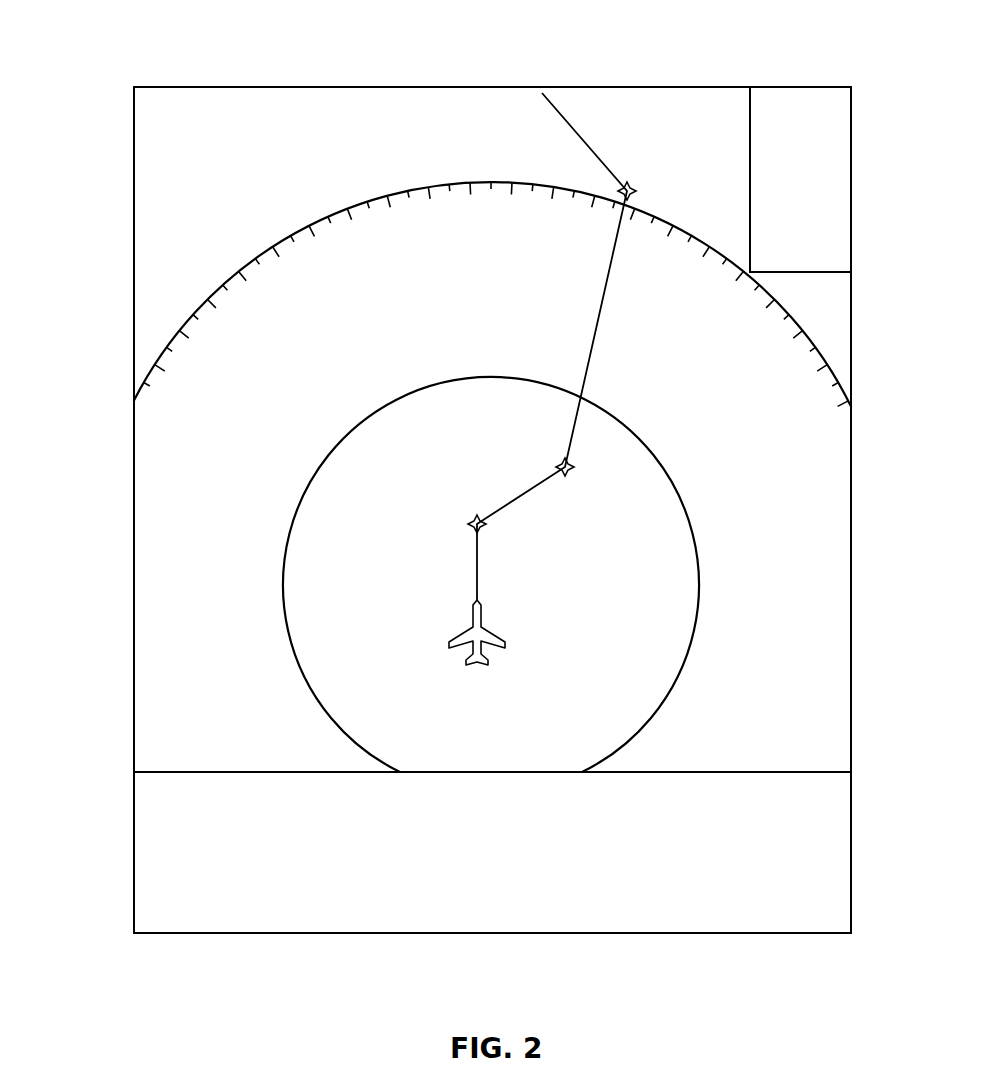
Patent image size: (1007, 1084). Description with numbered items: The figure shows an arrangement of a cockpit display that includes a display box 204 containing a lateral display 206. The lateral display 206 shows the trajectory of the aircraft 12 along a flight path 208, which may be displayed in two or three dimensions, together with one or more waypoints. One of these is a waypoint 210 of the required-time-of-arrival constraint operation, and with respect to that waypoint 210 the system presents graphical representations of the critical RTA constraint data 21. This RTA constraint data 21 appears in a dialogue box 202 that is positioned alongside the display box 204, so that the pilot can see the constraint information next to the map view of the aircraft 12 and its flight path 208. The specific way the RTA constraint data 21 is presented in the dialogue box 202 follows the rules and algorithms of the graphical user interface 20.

The aircraft 12 is at (481, 613).
The graphical user interface 20 is at (781, 87).
The RTA constraint data 21 is at (108, 888).
The dialogue box 202 is at (134, 845).
The display box 204 is at (207, 86).
The lateral display 206 is at (192, 282).
The flight path 208 is at (592, 352).
The waypoint 210 is at (627, 184).